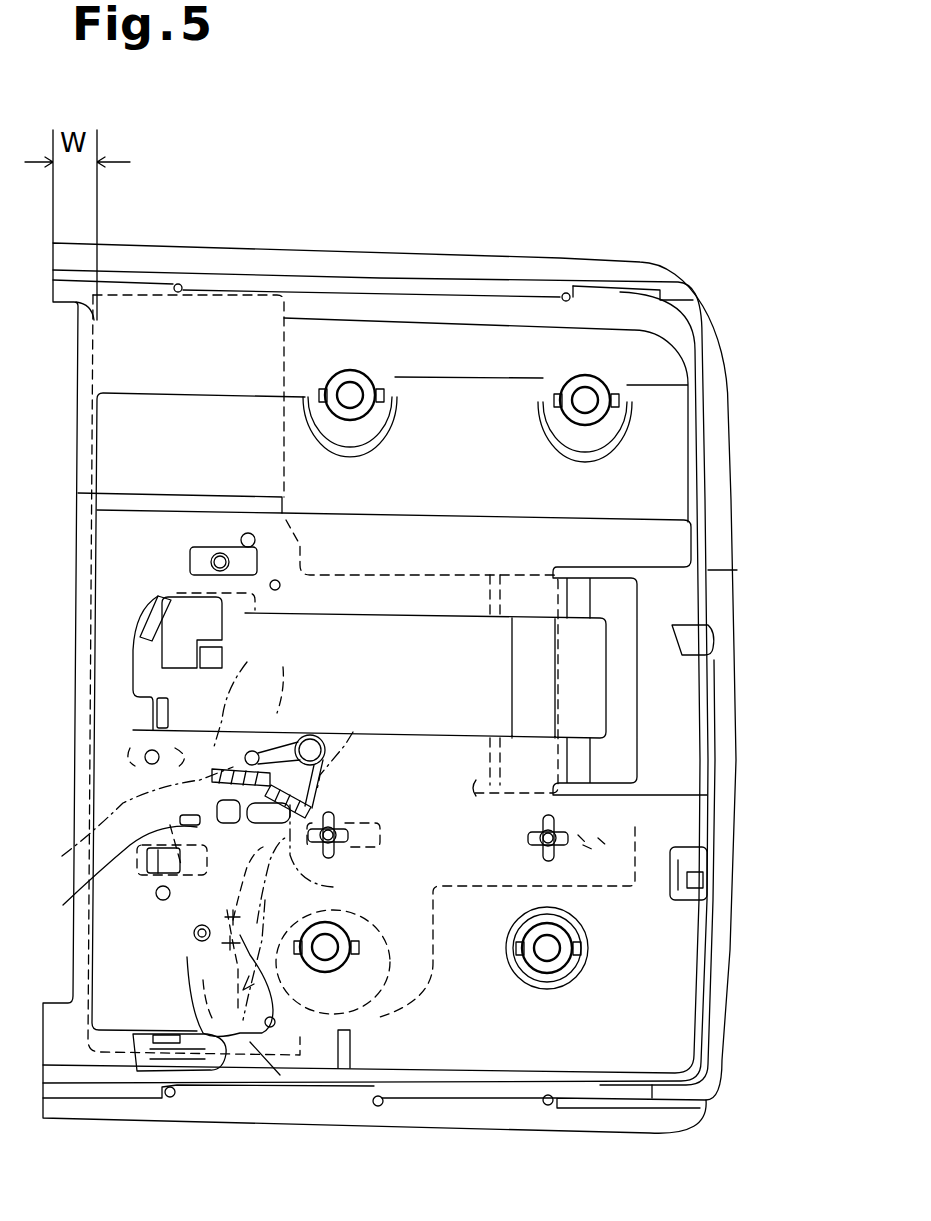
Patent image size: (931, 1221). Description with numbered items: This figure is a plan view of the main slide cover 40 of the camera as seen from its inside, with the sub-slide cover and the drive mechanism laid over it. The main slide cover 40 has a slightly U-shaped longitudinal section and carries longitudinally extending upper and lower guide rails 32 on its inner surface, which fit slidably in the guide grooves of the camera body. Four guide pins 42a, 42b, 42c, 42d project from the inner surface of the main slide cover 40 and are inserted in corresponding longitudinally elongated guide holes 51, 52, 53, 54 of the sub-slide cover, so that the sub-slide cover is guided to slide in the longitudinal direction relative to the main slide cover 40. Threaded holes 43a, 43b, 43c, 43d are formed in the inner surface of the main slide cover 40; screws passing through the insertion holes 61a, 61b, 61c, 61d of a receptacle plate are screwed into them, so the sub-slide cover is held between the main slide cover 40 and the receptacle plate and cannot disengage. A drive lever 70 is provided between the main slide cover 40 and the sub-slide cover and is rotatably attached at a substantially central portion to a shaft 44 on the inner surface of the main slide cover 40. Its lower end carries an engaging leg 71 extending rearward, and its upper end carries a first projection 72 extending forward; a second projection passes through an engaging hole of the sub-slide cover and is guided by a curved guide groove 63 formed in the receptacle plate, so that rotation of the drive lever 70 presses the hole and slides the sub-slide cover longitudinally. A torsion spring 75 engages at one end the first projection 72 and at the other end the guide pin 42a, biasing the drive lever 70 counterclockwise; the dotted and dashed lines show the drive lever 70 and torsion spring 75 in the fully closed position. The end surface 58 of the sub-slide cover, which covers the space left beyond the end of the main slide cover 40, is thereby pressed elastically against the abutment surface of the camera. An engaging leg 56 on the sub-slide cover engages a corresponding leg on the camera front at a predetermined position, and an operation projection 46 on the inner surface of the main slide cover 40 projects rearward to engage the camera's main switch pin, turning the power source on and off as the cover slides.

The guide rails 32 is at (444, 290).
The main slide cover 40 is at (729, 329).
The guide pin 42a is at (155, 752).
The guide pin 42b is at (252, 750).
The guide pin 42c is at (340, 847).
The guide pin 42d is at (560, 833).
The threaded hole 43a is at (350, 370).
The threaded hole 43b is at (602, 413).
The threaded hole 43c is at (318, 962).
The threaded hole 43d is at (572, 942).
The shaft 44 is at (187, 942).
The operation projection 46 is at (158, 712).
The guide hole 51 is at (78, 793).
The guide hole 52 is at (306, 735).
The guide hole 53 is at (387, 823).
The guide hole 54 is at (635, 827).
The engaging leg 56 is at (150, 617).
The end surface 58 is at (83, 424).
The insertion hole 61a is at (375, 373).
The insertion hole 61b is at (593, 377).
The insertion hole 61c is at (340, 960).
The insertion hole 61d is at (560, 975).
The curved guide groove 63 is at (118, 874).
The drive lever 70 is at (288, 956).
The engaging leg 71 is at (217, 1067).
The first projection 72 is at (210, 804).
The torsion spring 75 is at (250, 656).